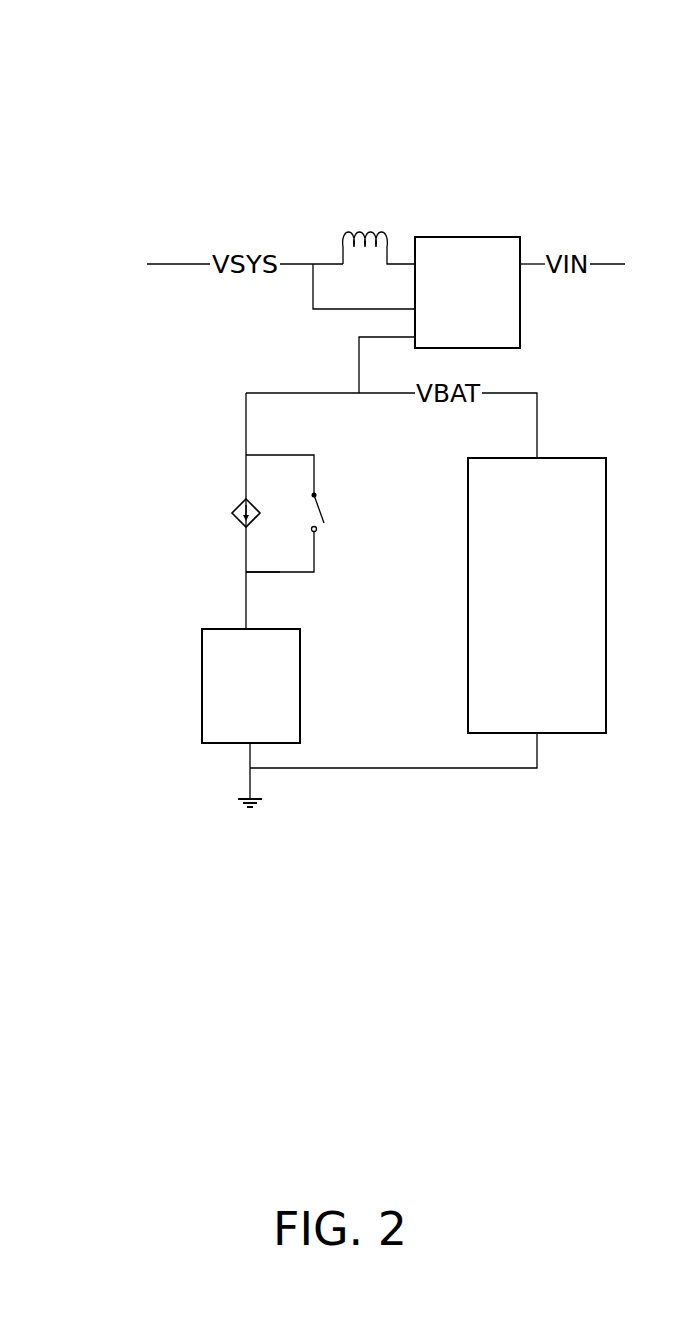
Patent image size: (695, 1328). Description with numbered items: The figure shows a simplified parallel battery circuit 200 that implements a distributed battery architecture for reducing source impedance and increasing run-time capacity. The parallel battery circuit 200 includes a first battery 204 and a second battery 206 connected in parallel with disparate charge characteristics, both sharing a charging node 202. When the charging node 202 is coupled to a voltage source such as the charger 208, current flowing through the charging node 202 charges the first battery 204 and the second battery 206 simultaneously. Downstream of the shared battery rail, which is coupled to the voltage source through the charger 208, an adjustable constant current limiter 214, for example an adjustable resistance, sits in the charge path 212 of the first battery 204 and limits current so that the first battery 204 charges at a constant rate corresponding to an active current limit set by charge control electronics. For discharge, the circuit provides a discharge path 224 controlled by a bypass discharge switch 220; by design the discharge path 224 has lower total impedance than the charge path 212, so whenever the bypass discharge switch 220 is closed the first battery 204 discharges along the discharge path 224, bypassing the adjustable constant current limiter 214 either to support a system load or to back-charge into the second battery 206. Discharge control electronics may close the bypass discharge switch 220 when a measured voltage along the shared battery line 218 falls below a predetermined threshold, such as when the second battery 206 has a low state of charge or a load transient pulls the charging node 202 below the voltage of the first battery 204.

The parallel battery circuit 200 is at (172, 93).
The charging node 202 is at (359, 393).
The first battery 204 is at (231, 698).
The second battery 206 is at (517, 609).
The charger 208 is at (447, 304).
The charge path 212 is at (246, 475).
The adjustable constant current limiter 214 is at (235, 511).
The shared battery line 218 is at (312, 393).
The bypass discharge switch 220 is at (323, 512).
The discharge path 224 is at (290, 572).